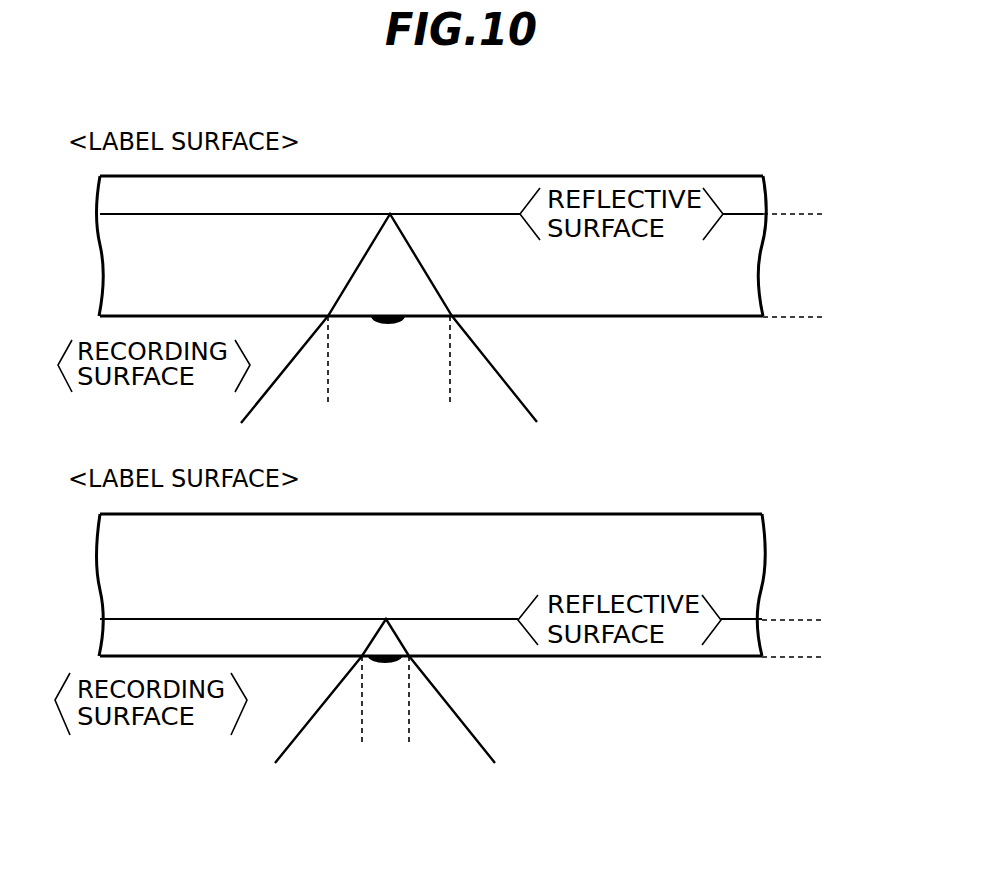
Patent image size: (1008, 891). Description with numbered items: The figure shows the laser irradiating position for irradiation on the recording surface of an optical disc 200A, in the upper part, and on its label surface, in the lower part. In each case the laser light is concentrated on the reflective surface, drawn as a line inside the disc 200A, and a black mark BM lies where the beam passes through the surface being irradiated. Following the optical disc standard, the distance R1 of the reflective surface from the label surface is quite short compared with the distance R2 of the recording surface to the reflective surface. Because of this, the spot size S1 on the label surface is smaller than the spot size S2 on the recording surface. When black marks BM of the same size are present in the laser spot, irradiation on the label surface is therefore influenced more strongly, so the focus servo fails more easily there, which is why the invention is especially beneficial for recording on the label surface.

The optical disc 200A is at (661, 152).
The black mark BM is at (387, 324).
The spot size of the recording surface S2 is at (450, 383).
The spot size of the label surface S1 is at (442, 723).
The distance of the recording surface to the reflective surface R2 is at (793, 214).
The distance of the reflective surface from the label surface R1 is at (791, 585).